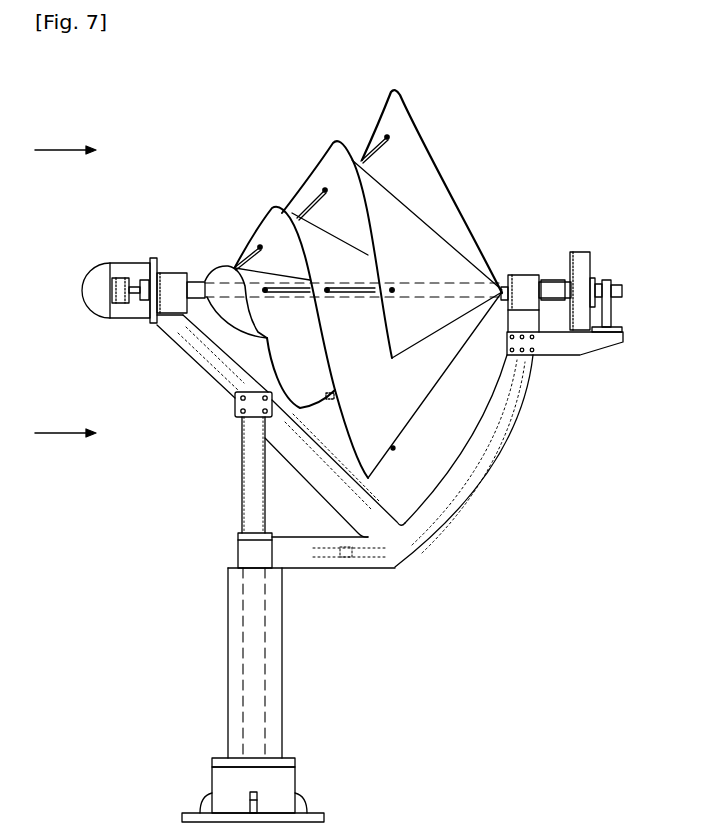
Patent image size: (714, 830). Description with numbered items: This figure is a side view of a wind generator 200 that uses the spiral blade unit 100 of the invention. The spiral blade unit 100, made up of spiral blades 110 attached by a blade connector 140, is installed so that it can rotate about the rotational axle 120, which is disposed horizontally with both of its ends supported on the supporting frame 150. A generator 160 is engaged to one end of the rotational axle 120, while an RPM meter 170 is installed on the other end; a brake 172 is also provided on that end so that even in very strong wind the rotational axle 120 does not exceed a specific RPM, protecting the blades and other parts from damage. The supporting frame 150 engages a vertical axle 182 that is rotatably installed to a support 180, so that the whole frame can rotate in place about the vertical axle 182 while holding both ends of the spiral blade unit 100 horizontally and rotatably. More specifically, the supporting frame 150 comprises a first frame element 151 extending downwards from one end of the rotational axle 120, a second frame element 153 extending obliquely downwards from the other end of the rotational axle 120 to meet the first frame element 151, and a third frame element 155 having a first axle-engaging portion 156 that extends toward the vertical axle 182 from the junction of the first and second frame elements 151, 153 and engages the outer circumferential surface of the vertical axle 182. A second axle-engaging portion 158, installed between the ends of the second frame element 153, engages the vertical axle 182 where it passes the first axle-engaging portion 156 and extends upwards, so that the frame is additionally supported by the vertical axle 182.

The spiral blade unit 100 is at (442, 146).
The spiral blade 110 is at (384, 94).
The rotational axle 120 is at (213, 286).
The blade connector 140 is at (304, 195).
The supporting frame 150 is at (366, 472).
The first frame element 151 is at (458, 507).
The second frame element 153 is at (185, 349).
The third frame element 155 is at (305, 556).
The first axle-engaging portion 156 is at (235, 547).
The second axle-engaging portion 158 is at (235, 406).
The generator 160 is at (582, 258).
The RPM meter 170 is at (122, 280).
The brake 172 is at (147, 257).
The support 180 is at (277, 668).
The vertical axle 182 is at (250, 648).
The wind generator 200 is at (207, 155).